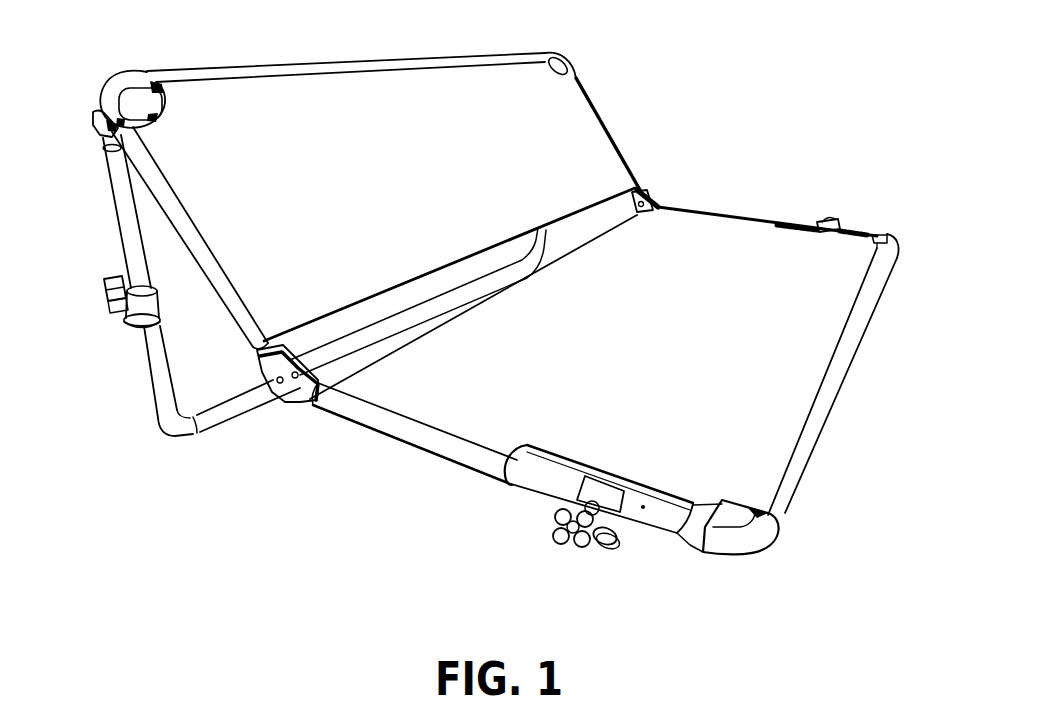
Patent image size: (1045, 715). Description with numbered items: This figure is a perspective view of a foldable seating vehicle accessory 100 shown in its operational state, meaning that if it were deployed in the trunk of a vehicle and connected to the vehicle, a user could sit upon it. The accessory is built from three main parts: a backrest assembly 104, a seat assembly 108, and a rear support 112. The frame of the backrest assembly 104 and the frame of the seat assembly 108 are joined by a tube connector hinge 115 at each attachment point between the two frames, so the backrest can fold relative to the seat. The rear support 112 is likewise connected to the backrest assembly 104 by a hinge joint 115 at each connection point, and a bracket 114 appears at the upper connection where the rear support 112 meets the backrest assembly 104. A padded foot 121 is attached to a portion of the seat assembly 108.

The foldable seating vehicle accessory 100 is at (100, 24).
The backrest assembly 104 is at (565, 62).
The seat assembly 108 is at (833, 383).
The rear support 112 is at (167, 427).
The leg bracket 114 is at (98, 122).
The tube connector hinge 115 is at (283, 402).
The padded foot 121 is at (583, 552).